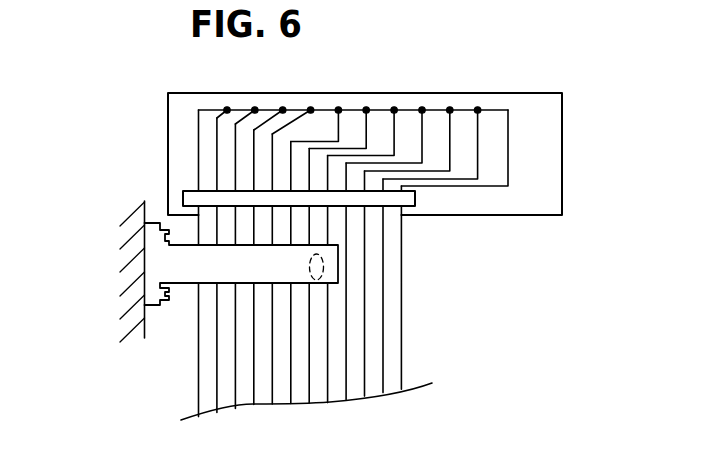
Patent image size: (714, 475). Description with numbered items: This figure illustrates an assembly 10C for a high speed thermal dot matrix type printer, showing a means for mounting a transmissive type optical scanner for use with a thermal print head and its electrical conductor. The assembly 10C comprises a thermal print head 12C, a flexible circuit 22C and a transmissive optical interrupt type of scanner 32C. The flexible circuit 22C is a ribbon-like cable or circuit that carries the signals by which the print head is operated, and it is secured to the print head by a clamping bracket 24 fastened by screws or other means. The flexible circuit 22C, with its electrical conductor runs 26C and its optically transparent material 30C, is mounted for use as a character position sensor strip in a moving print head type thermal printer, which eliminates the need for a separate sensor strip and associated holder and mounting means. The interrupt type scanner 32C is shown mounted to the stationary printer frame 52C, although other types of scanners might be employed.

The assembly 10C is at (420, 78).
The thermal print head 12C is at (555, 137).
The clamping bracket 24 is at (390, 198).
The flexible circuit 22C is at (403, 264).
The scanner 32C is at (323, 270).
The electrical conductor runs 26C is at (387, 317).
The optically transparent material 30C is at (392, 349).
The stationary printer frame 52C is at (143, 289).